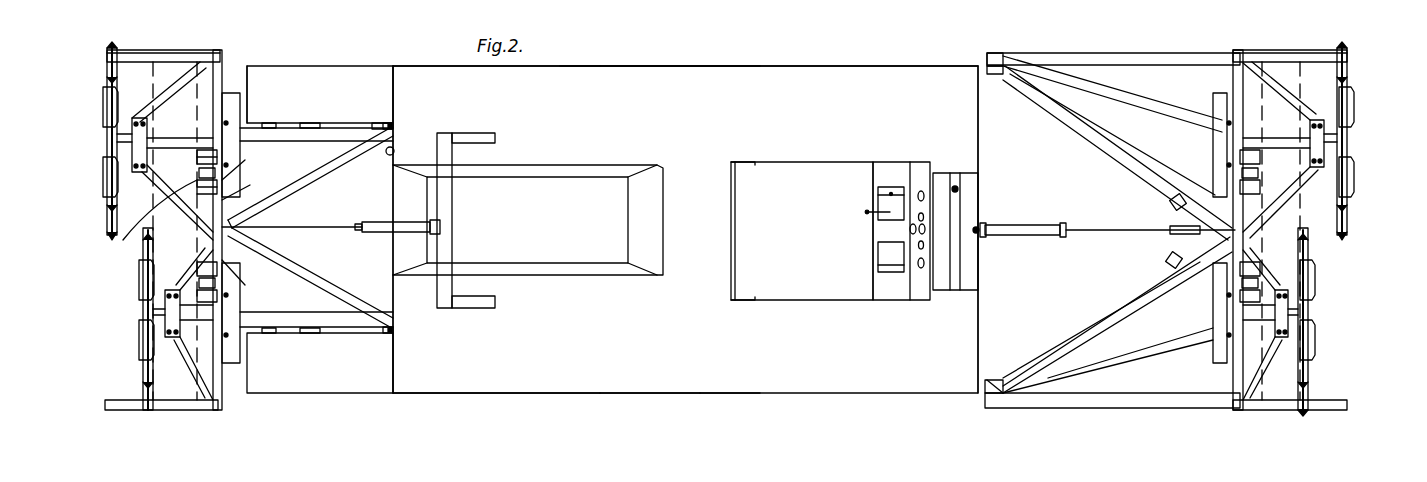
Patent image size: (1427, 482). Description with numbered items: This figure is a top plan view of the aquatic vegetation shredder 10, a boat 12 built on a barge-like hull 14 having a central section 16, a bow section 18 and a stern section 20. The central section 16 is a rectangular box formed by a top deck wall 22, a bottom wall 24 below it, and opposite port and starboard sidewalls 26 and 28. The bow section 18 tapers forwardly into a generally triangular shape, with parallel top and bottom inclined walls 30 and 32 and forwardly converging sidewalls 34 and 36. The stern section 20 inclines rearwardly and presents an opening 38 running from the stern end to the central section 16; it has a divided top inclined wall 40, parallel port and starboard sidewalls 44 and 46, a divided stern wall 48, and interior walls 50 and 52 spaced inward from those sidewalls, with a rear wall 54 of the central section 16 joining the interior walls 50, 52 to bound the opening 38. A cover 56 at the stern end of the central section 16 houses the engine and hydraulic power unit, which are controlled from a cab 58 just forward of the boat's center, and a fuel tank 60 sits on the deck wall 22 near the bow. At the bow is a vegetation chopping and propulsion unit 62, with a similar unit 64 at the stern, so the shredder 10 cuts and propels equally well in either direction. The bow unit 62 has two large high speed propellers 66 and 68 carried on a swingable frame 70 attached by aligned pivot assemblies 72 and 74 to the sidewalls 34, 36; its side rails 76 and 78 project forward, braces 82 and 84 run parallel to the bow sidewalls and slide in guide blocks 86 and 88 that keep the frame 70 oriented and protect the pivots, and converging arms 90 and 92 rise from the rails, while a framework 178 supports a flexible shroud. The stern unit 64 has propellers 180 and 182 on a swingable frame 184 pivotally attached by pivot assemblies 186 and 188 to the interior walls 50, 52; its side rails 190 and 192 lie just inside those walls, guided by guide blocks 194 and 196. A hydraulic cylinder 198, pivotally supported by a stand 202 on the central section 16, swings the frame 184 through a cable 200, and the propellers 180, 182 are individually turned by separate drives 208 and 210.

The aquatic vegetation shredder 10 is at (790, 62).
The boat 12 is at (775, 393).
The hull 14 is at (492, 393).
The central section 16 is at (617, 393).
The bow section 18 is at (978, 110).
The stern section 20 is at (376, 393).
The top deck wall 22 is at (651, 324).
The bottom wall 24 is at (602, 33).
The port sidewall 26 is at (710, 66).
The starboard sidewall 28 is at (717, 393).
The top inclined wall 30 is at (978, 333).
The bottom inclined wall 32 is at (1046, 5).
The port sidewall of bow section 34 is at (1030, 98).
The starboard sidewall of bow section 36 is at (1085, 318).
The opening 38 is at (404, 222).
The divided top inclined wall 40 is at (390, 107).
The port sidewall of stern section 44 is at (302, 66).
The starboard sidewall of stern section 46 is at (283, 393).
The divided stern wall 48 is at (244, 75).
The interior wall 50 is at (305, 123).
The interior wall 52 is at (302, 333).
The rear wall 54 is at (393, 152).
The cover 56 is at (588, 164).
The cab 58 is at (815, 162).
The fuel tank 60 is at (940, 173).
The vegetation chopping and propulsion unit 62 is at (1362, 131).
The vegetation chopping and propulsion unit 64 is at (96, 112).
The propeller 66 is at (1347, 75).
The propeller 68 is at (1312, 340).
The swingable frame 70 is at (1105, 53).
The pivot assembly 72 is at (990, 58).
The pivot assembly 74 is at (990, 380).
The side rail 76 is at (1178, 60).
The side rail 78 is at (1170, 408).
The brace 82 is at (1125, 143).
The brace 84 is at (1162, 290).
The guide block 86 is at (1174, 205).
The guide block 88 is at (1170, 258).
The arm 90 is at (1112, 94).
The arm 92 is at (1133, 356).
The framework 178 is at (1345, 405).
The propeller 180 is at (113, 62).
The propeller 182 is at (143, 338).
The swingable frame 184 is at (222, 50).
The pivot assembly 186 is at (393, 122).
The pivot assembly 188 is at (393, 333).
The side rail 190 is at (292, 141).
The side rail 192 is at (349, 320).
The guide block 194 is at (266, 123).
The guide block 196 is at (268, 333).
The hydraulic cylinder 198 is at (400, 235).
The cable 200 is at (298, 222).
The stand 202 is at (446, 248).
The drive 208 is at (150, 225).
The drive 210 is at (245, 278).